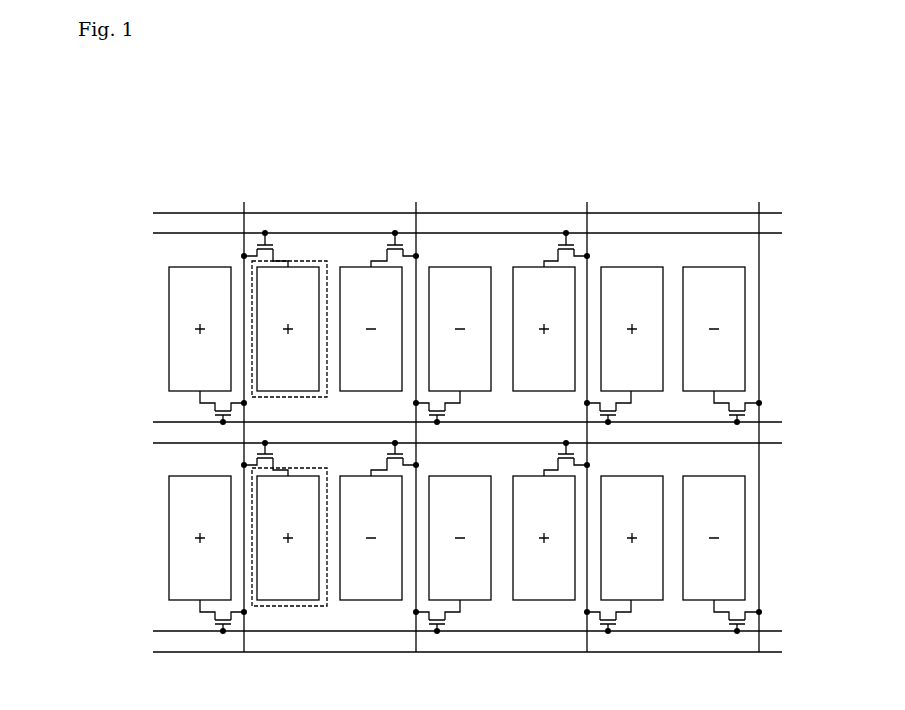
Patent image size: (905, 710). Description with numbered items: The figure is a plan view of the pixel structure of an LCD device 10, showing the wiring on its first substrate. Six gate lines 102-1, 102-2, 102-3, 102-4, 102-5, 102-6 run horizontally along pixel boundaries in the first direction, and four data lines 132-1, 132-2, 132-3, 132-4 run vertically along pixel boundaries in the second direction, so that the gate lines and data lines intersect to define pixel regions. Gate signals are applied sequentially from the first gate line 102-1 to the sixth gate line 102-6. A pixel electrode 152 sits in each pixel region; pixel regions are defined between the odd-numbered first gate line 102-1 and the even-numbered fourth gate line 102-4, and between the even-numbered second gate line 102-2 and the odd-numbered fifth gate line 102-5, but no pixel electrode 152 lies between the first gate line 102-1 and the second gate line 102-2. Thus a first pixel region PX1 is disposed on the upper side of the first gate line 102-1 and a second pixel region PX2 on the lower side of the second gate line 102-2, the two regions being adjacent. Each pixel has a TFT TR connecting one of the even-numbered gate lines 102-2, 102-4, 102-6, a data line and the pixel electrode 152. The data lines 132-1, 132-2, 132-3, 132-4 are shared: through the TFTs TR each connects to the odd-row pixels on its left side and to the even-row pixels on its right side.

The LCD device 10 is at (491, 142).
The first gate line 102-1 is at (443, 422).
The second gate line 102-2 is at (443, 443).
The third gate line 102-3 is at (443, 214).
The fourth gate line 102-4 is at (443, 234).
The fifth gate line 102-5 is at (443, 631).
The sixth gate line 102-6 is at (443, 652).
The data line 132-1 is at (244, 416).
The data line 132-2 is at (416, 416).
The data line 132-3 is at (587, 416).
The data line 132-4 is at (761, 416).
The pixel electrode 152 is at (170, 332).
The TFT TR is at (183, 406).
The first pixel region PX1 is at (317, 261).
The second pixel region PX2 is at (317, 606).